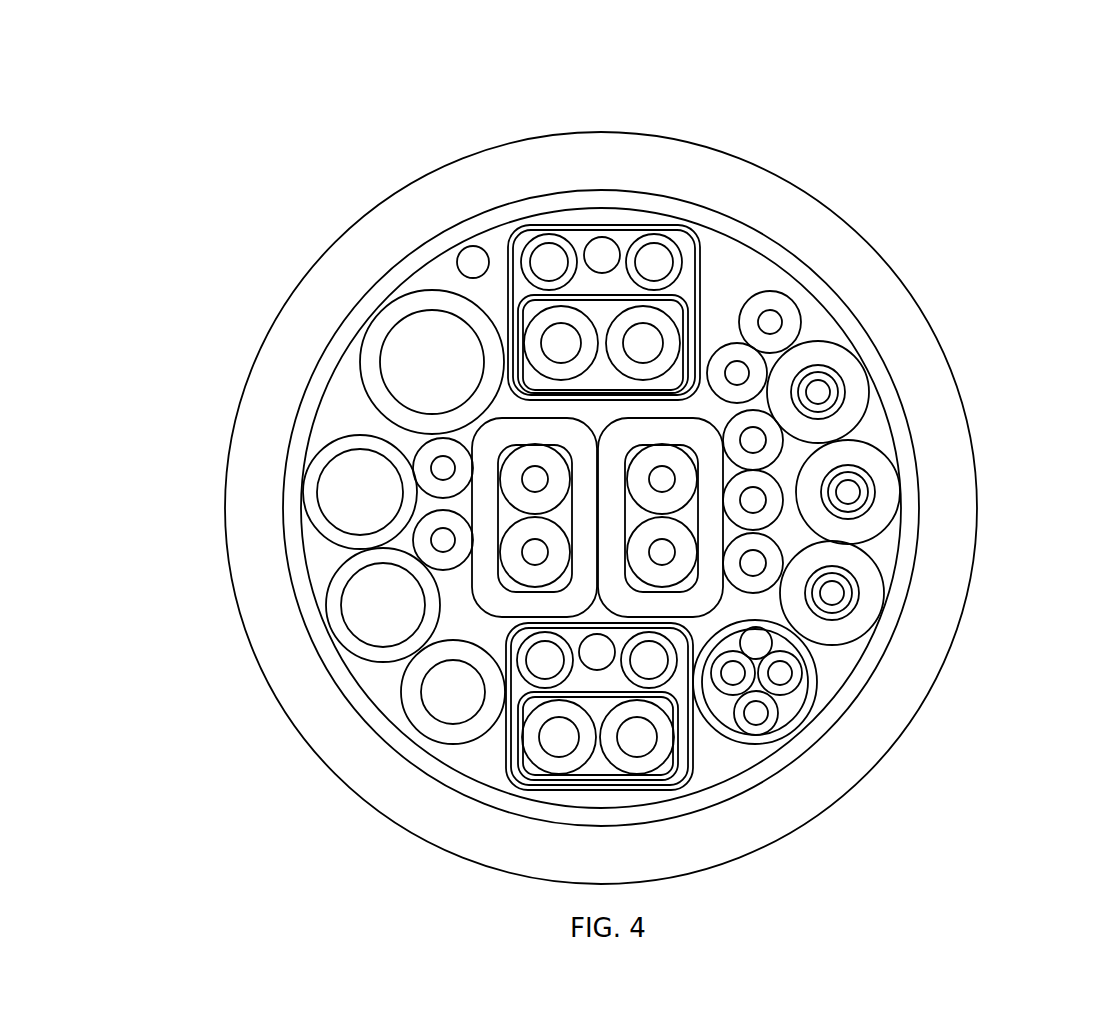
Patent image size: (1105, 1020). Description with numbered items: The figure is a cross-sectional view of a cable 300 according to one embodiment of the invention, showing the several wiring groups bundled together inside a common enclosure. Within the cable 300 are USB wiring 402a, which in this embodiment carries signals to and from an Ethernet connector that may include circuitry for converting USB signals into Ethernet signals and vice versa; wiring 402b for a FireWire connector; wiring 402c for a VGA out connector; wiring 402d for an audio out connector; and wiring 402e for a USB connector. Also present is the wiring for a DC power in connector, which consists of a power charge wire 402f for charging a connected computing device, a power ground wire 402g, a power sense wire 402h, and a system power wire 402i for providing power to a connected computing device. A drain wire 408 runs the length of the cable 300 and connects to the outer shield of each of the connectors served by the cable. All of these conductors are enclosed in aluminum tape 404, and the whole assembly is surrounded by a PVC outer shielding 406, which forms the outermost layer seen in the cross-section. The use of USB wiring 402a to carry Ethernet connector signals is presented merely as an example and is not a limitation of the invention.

The cable 300 is at (398, 123).
The USB wiring 402a is at (588, 227).
The wiring for the FireWire connector 402b is at (577, 420).
The wiring for the VGA out connector 402c is at (885, 602).
The wiring for the audio out connector 402d is at (826, 655).
The wiring for the USB connector 402e is at (697, 738).
The power charge wire 402f is at (402, 696).
The power ground wire 402g is at (335, 579).
The power sense wire 402h is at (423, 518).
The system power wire 402i is at (413, 292).
The aluminum tape 404 is at (850, 705).
The PVC outer shielding 406 is at (867, 775).
The drain wire 408 is at (460, 250).